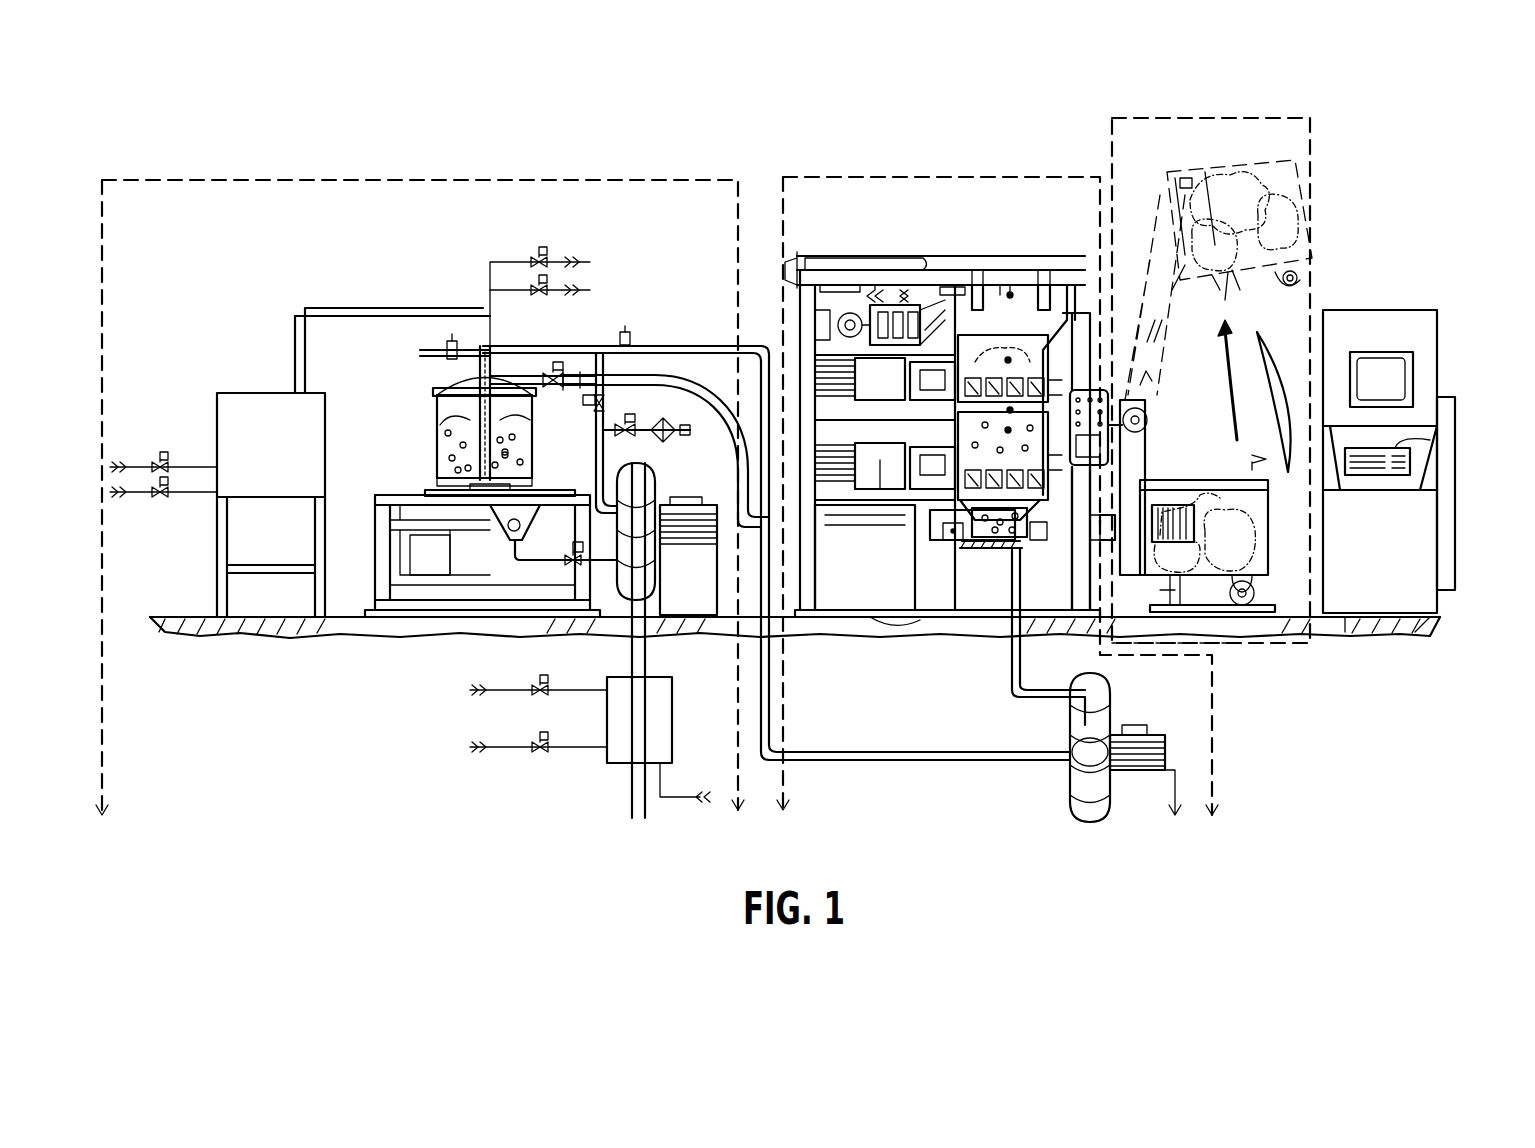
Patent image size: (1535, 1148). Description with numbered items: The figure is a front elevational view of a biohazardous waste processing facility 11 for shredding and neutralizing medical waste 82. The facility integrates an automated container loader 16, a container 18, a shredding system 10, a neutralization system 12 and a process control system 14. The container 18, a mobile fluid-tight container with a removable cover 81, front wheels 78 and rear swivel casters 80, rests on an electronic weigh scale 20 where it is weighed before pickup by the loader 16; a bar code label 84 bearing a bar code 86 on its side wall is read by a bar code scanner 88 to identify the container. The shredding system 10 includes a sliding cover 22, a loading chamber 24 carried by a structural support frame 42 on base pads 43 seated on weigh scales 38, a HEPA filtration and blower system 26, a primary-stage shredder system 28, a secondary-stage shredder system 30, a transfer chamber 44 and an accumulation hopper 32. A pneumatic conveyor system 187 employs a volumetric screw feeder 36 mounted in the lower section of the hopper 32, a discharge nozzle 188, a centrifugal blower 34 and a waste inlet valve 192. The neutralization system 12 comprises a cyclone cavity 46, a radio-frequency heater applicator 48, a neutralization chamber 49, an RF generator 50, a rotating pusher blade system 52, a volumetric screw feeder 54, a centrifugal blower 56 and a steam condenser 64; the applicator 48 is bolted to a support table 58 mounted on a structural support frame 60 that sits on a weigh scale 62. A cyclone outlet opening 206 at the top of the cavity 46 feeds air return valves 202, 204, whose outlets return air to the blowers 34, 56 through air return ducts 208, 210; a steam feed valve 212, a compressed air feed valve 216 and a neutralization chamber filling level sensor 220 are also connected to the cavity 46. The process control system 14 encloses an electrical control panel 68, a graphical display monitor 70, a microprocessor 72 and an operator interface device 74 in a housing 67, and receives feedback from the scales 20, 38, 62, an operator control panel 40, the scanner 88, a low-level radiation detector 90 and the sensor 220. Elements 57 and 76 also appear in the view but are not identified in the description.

The shredding system 10 is at (915, 175).
The biohazardous waste processing facility 11 is at (722, 160).
The neutralization system 12 is at (455, 176).
The process control system 14 is at (1385, 310).
The automated container loader 16 is at (1188, 118).
The container 18 is at (1275, 615).
The electronic weigh scale 20 is at (1208, 642).
The sliding cover 22 is at (975, 290).
The loading chamber 24 is at (1020, 290).
The HEPA filtration and blower system 26 is at (878, 305).
The primary-stage shredder system 28 is at (960, 372).
The secondary-stage shredder system 30 is at (897, 470).
The accumulation hopper 32 is at (945, 560).
The centrifugal blower 34 is at (1095, 680).
The volumetric screw feeder 36 is at (1005, 560).
The weigh scales 38 is at (960, 619).
The operator control panel 40 is at (1148, 400).
The structural support frame 42 is at (800, 322).
The base pads 43 is at (878, 620).
The transfer chamber 44 is at (962, 455).
The cyclone cavity 46 is at (430, 372).
The radio-frequency heater applicator 48 is at (535, 405).
The neutralization chamber 49 is at (435, 428).
The RF generator 50 is at (255, 393).
The rotating pusher blade system 52 is at (437, 470).
The volumetric screw feeder 54 is at (500, 543).
The centrifugal blower 56 is at (700, 552).
The hopper 57 is at (514, 545).
The support table 58 is at (375, 500).
The structural support frame 60 is at (380, 565).
The weigh scale 62 is at (390, 619).
The steam condenser 64 is at (607, 758).
The housing 67 is at (1437, 320).
The electrical control panel 68 is at (1448, 582).
The graphical display monitor 70 is at (1400, 378).
The microprocessor 72 is at (1410, 532).
The operator interface device 74 is at (1437, 455).
The floor 76 is at (1405, 636).
The front wheels 78 is at (1320, 268).
The rear swivel casters 80 is at (1242, 372).
The removable cover 81 is at (1280, 333).
The medical waste 82 is at (1318, 203).
The bar code label 84 is at (1170, 503).
The bar code 86 is at (1205, 497).
The bar code scanner 88 is at (1100, 530).
The low-level radiation detector 90 is at (1092, 560).
The pneumatic conveyor system 187 is at (975, 550).
The discharge nozzle 188 is at (945, 540).
The waste inlet valve 192 is at (540, 375).
The air return valve 202 is at (627, 331).
The air return valve 204 is at (565, 378).
The cyclone outlet opening 206 is at (560, 350).
The air return duct 208 is at (682, 345).
The air return duct 210 is at (597, 440).
The steam feed valve 212 is at (537, 258).
The compressed air feed valve 216 is at (542, 282).
The neutralization chamber filling level sensor 220 is at (455, 341).